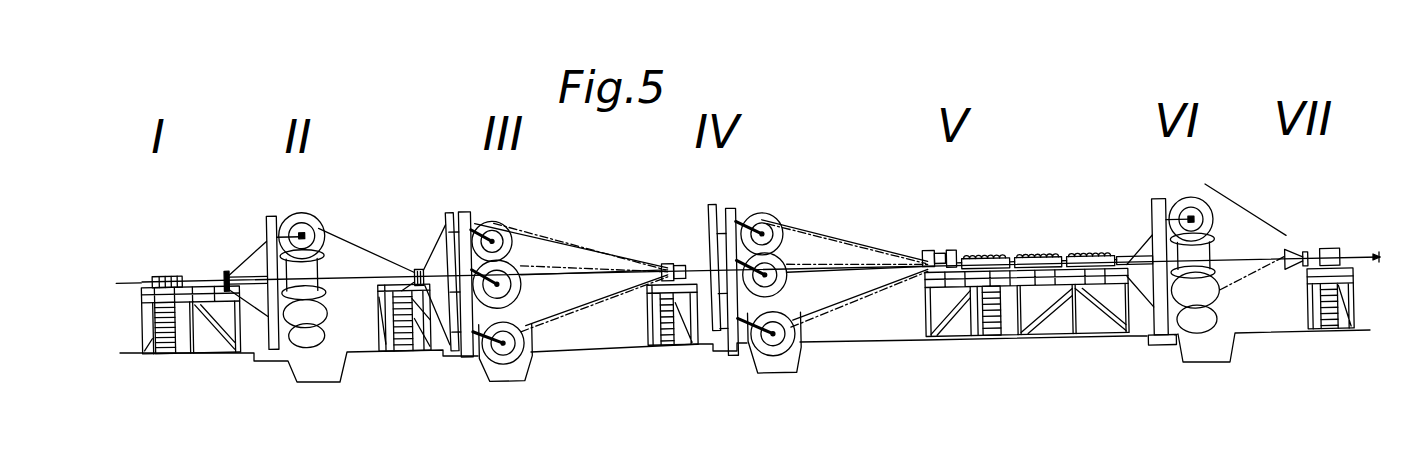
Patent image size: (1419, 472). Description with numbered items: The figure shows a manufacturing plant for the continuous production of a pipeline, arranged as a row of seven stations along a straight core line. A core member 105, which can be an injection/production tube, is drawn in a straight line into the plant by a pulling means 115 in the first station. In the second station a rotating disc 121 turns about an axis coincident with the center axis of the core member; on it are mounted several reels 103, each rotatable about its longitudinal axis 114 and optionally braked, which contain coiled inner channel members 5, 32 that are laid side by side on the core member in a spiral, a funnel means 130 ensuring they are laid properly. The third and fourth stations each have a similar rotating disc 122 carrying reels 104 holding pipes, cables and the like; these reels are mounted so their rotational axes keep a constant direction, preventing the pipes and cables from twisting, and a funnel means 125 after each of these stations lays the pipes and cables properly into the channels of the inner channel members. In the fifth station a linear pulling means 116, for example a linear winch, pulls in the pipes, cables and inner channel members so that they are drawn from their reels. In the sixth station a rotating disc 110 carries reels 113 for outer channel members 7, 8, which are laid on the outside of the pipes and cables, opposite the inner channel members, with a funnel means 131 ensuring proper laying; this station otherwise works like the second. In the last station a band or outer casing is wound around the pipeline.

The inner channel member 5 is at (366, 243).
The outer channel member 7 is at (597, 247).
The strand 8 is at (833, 238).
The inner channel member 32 is at (560, 232).
The reel 103 is at (325, 251).
The reel 104 is at (486, 232).
The core member 105 is at (132, 282).
The rotating disc 110 is at (1153, 197).
The reel 113 is at (1198, 204).
The longitudinal axis 114 is at (305, 236).
The pulling means 115 is at (165, 276).
The linear pulling means 116 is at (980, 258).
The rotating disc 121 is at (272, 213).
The rotating disc 122 is at (267, 248).
The funnel means 125 is at (668, 266).
The funnel means 130 is at (411, 268).
The funnel means 131 is at (1293, 272).